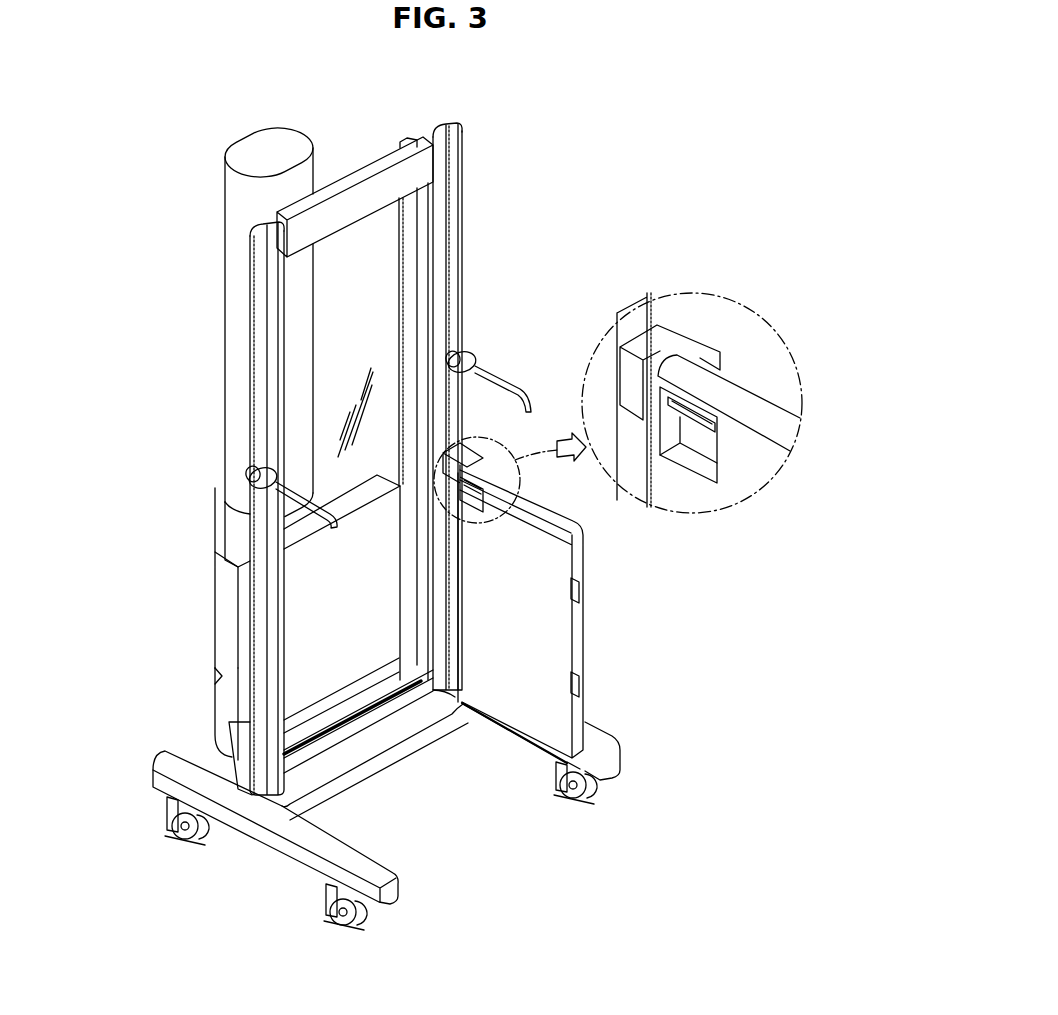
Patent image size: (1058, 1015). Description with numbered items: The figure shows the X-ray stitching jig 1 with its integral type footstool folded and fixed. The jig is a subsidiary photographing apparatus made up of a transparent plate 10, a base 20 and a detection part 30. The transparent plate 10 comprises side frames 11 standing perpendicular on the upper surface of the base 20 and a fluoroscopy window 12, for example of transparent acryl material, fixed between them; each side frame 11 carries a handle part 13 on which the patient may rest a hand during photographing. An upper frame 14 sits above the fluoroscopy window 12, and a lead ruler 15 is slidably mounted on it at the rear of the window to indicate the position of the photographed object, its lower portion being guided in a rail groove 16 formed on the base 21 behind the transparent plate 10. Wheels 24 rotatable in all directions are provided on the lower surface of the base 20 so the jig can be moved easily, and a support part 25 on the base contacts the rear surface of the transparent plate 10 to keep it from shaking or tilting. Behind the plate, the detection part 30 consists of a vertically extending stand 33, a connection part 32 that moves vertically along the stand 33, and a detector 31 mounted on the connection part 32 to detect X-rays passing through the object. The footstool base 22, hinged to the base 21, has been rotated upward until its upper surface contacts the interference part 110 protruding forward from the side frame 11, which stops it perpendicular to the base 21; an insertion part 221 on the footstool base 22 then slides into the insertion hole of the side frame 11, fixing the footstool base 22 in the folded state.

The X-ray stitching jig 1 is at (160, 97).
The transparent plate 10 is at (466, 252).
The side frame 11 is at (258, 272).
The fluoroscopy window 12 is at (362, 245).
The handle part 13 is at (256, 478).
The upper frame 14 is at (413, 170).
The lead ruler 15 is at (416, 228).
The rail groove 16 is at (373, 712).
The base 20 is at (158, 748).
The base 21 is at (362, 862).
The footstool base 22 is at (580, 652).
The wheels 24 is at (176, 814).
The support part 25 is at (248, 742).
The detection part 30 is at (214, 333).
The detector 31 is at (245, 608).
The connection part 32 is at (228, 540).
The stand 33 is at (240, 205).
The interference part 110 is at (695, 335).
The insertion part 221 is at (692, 425).